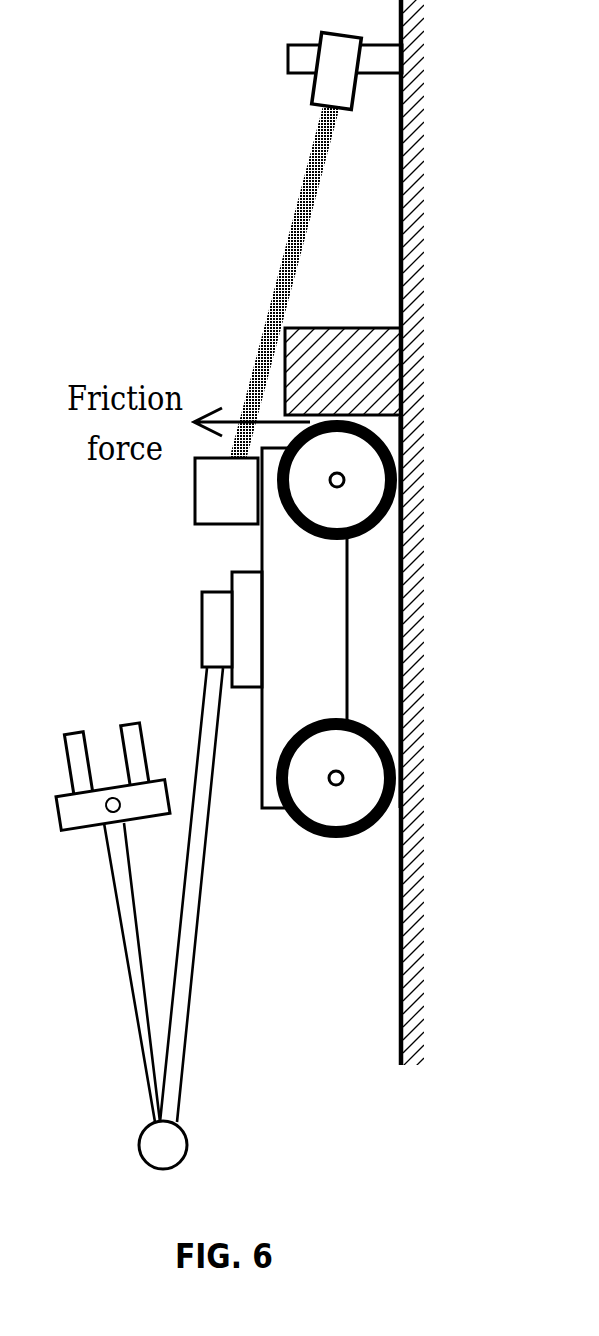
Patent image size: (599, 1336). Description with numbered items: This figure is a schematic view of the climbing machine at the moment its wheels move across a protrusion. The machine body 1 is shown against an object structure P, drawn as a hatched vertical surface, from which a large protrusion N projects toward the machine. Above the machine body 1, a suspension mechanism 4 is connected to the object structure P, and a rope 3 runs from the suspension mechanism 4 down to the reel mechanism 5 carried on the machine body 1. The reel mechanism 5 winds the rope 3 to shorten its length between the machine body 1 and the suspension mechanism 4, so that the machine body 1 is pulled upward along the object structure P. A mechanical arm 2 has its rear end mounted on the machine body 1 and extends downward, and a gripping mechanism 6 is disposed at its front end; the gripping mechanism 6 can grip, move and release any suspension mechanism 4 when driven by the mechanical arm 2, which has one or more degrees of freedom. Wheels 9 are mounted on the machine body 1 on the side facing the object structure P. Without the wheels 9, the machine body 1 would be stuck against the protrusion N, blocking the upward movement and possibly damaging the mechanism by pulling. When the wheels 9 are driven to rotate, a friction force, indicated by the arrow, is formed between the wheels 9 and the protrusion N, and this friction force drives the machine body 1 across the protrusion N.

The machine body 1 is at (330, 598).
The mechanical arm 2 is at (188, 923).
The rope 3 is at (297, 230).
The suspension mechanism 4 is at (315, 95).
The reel mechanism 5 is at (210, 500).
The gripping mechanism 6 is at (73, 742).
The wheels 9 is at (370, 487).
The protrusion N is at (353, 328).
The object structure P is at (420, 919).